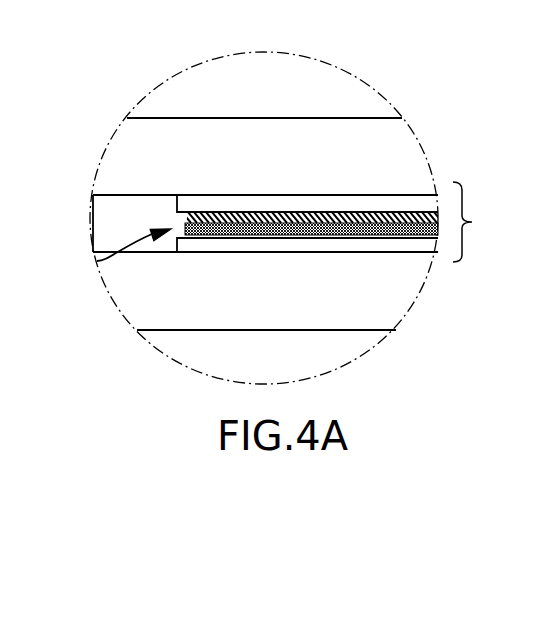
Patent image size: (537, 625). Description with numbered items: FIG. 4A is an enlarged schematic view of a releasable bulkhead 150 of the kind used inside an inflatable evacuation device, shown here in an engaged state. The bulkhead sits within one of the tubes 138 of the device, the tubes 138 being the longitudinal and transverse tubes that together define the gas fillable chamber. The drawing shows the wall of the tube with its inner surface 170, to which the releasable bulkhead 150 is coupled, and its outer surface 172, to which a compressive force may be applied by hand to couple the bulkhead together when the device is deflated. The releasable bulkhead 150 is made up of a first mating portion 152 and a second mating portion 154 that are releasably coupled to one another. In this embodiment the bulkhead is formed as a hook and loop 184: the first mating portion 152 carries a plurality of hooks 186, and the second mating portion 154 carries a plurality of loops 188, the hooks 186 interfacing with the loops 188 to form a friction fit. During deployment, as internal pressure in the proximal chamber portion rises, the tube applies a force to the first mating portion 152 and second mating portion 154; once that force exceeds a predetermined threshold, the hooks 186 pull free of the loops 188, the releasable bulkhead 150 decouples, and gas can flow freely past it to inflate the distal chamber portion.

The tubes 138 is at (384, 300).
The releasable bulkhead 150 is at (97, 261).
The first mating portion 152 is at (256, 195).
The second mating portion 154 is at (258, 253).
The inner surface 170 is at (118, 196).
The outer surface 172 is at (262, 118).
The hook and loop 184 is at (351, 228).
The hooks 186 is at (350, 213).
The loops 188 is at (357, 237).